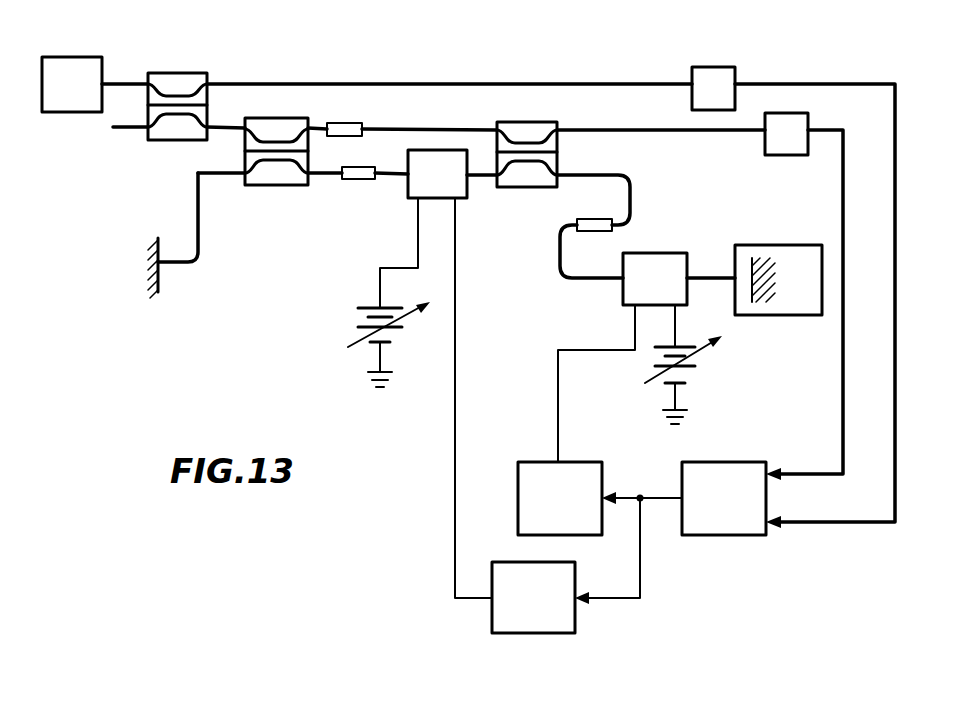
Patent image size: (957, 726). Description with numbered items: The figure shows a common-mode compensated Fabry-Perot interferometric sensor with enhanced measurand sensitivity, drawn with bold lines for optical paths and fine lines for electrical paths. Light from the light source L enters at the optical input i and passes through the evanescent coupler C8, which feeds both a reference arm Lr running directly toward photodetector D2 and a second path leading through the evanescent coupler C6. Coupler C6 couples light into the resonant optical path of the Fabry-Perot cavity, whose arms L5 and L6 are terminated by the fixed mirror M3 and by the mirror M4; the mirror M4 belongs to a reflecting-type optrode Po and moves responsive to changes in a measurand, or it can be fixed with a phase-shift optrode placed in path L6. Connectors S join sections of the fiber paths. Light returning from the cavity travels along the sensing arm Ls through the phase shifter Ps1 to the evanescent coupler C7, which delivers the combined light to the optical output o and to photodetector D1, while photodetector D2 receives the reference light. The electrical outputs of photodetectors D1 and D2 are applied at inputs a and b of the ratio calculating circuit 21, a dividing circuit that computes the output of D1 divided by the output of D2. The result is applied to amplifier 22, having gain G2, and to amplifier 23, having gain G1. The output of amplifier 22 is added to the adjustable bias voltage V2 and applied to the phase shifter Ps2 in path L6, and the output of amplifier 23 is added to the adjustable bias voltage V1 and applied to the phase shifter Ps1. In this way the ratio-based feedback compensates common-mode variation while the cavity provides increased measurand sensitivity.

The light source L is at (72, 84).
The evanescent coupler C8 is at (176, 73).
The evanescent coupler C6 is at (281, 118).
The evanescent coupler C7 is at (532, 122).
The connectors S is at (355, 122).
The optical input i is at (224, 111).
The reference arm Lr is at (470, 128).
The sensing arm Ls is at (482, 177).
The phase shifter Ps1 is at (437, 174).
The phase shifter Ps2 is at (655, 279).
The photodetector D1 is at (786, 134).
The photodetector D2 is at (713, 88).
The optical output o is at (749, 137).
The mirror M3 is at (128, 268).
The mirror M4 is at (778, 280).
The optrode Po is at (778, 315).
The arm L5 is at (190, 265).
The arm L6 is at (556, 272).
The variable voltage source V1 is at (359, 322).
The variable voltage source V2 is at (702, 373).
The ratio calculating circuit 21 is at (737, 437).
The amplifier 22 is at (518, 502).
The amplifier 23 is at (532, 633).
The gain G1 is at (533, 598).
The gain G2 is at (560, 498).
The ratio circuit input a is at (854, 461).
The ratio circuit input b is at (895, 505).